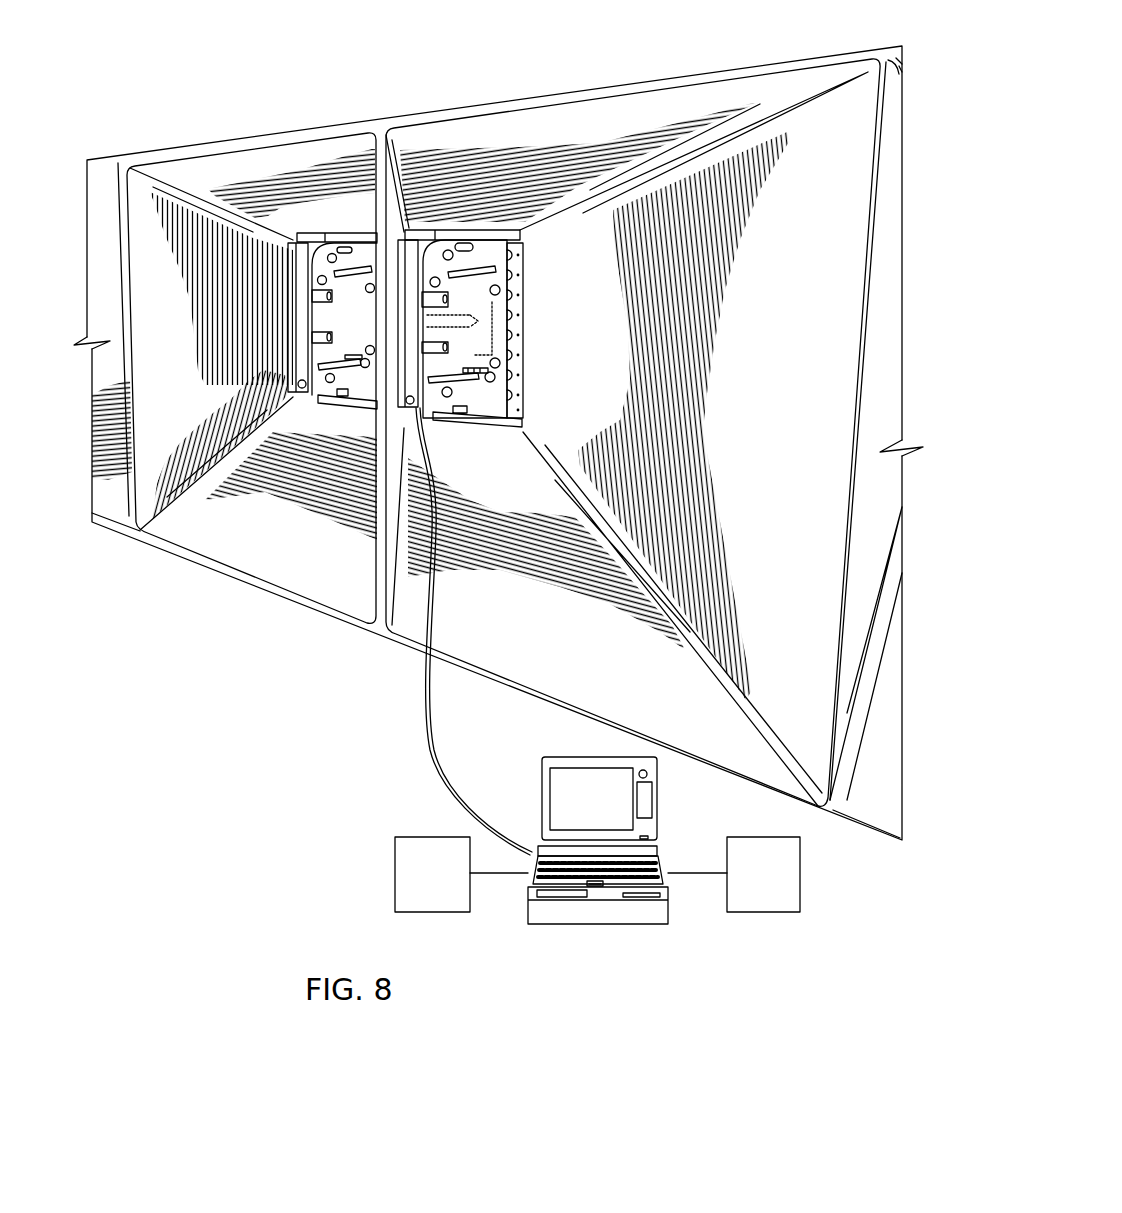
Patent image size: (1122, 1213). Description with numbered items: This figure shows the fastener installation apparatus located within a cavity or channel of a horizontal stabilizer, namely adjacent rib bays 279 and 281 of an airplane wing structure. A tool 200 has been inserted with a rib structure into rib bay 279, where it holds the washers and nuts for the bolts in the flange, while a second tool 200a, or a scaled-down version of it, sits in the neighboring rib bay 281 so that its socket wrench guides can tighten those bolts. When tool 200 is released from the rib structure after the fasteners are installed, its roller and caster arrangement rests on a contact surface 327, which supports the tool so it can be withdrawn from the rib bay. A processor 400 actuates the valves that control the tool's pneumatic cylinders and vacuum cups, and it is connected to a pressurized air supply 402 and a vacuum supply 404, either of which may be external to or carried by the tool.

The rib bay 281 is at (227, 169).
The rib bay 279 is at (646, 124).
The tool 200a is at (343, 222).
The tool 200 is at (495, 208).
The contact surface 327 is at (529, 643).
The processor 400 is at (590, 913).
The pressurized air supply 402 is at (425, 893).
The vacuum supply 404 is at (750, 893).